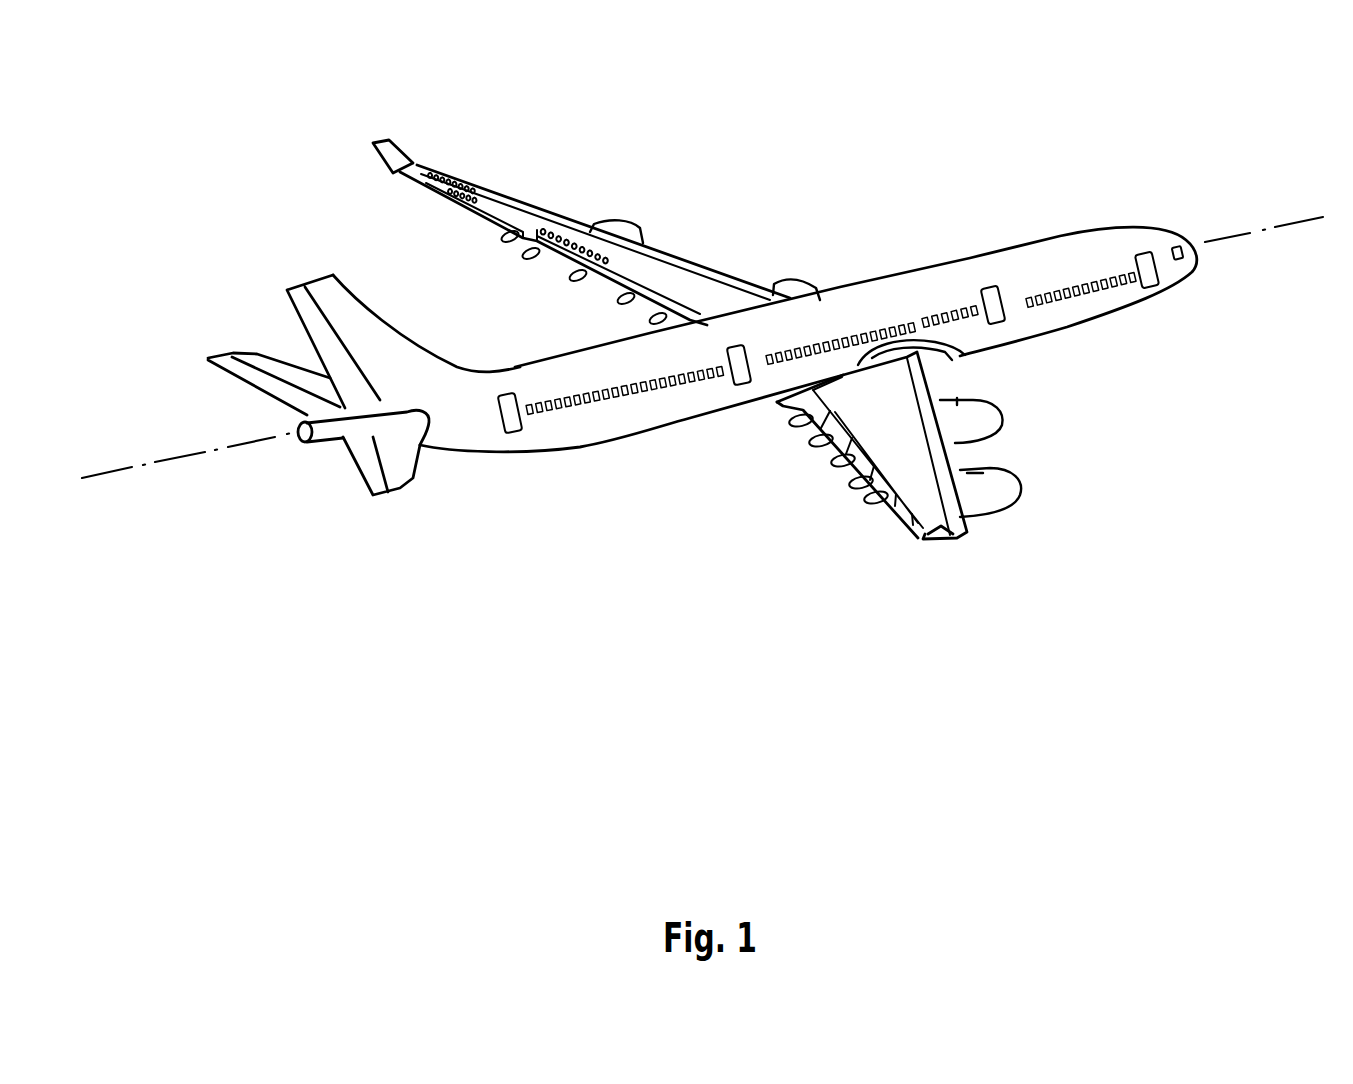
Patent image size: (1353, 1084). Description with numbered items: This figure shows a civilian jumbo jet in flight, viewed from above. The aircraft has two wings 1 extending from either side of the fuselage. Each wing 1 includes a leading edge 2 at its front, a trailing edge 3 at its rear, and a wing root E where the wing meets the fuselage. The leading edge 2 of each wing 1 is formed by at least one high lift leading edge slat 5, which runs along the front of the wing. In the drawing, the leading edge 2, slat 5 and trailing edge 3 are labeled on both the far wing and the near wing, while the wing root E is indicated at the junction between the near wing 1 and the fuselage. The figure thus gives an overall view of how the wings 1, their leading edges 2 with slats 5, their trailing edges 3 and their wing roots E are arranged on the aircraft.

The wing 1 is at (673, 274).
The high lift leading edge slat 5 is at (711, 270).
The leading edge 2 is at (737, 273).
The trailing edge 3 is at (574, 268).
The wing root E is at (858, 360).